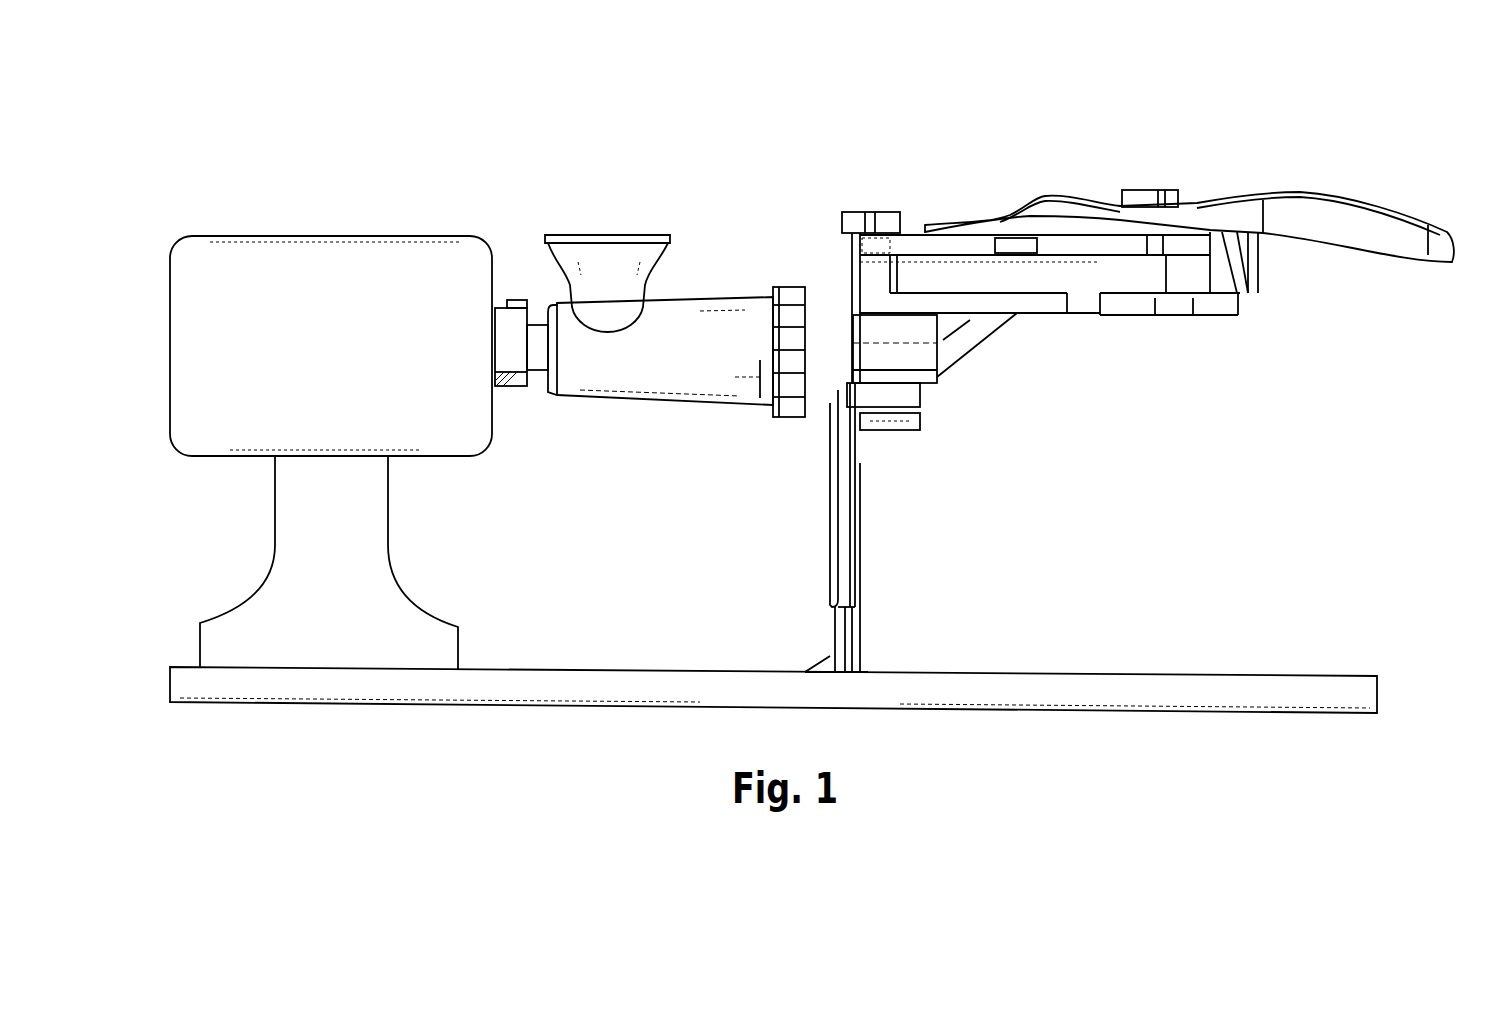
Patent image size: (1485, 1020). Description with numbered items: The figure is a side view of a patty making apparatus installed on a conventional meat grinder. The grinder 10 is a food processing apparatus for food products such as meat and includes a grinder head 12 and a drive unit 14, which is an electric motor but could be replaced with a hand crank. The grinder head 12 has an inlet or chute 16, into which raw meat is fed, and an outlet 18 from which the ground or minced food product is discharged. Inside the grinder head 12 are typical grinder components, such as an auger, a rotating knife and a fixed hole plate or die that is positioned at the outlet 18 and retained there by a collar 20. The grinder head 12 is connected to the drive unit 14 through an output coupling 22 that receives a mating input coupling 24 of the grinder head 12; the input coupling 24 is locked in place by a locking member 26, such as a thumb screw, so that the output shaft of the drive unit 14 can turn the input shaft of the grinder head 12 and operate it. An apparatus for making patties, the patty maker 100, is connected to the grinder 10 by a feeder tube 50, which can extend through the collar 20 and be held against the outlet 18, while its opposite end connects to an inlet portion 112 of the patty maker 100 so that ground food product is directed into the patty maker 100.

The grinder 10 is at (205, 185).
The drive unit 14 is at (288, 312).
The locking member 26 is at (513, 300).
The output coupling 22 is at (510, 358).
The input coupling 24 is at (545, 370).
The grinder head 12 is at (698, 327).
The chute 16 is at (598, 268).
The outlet 18 is at (762, 385).
The collar 20 is at (785, 287).
The feeder tube 50 is at (833, 340).
The inlet portion 112 is at (903, 357).
The patty maker 100 is at (963, 168).